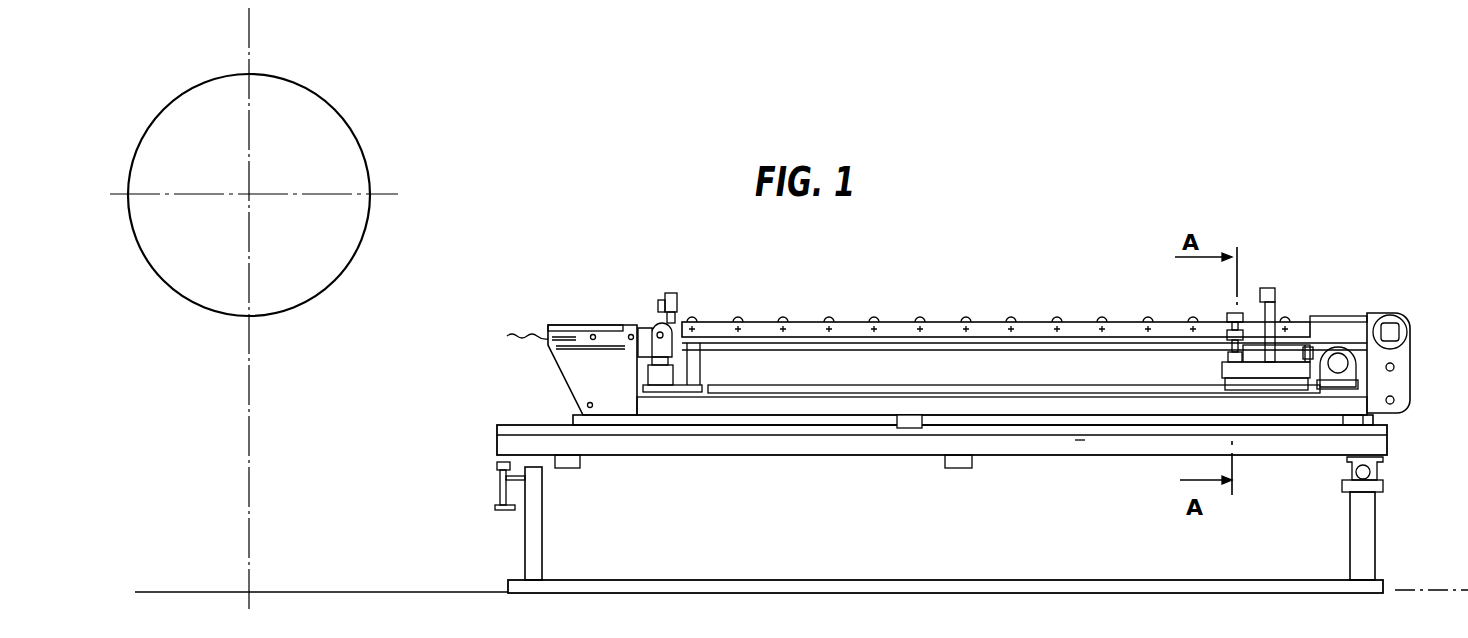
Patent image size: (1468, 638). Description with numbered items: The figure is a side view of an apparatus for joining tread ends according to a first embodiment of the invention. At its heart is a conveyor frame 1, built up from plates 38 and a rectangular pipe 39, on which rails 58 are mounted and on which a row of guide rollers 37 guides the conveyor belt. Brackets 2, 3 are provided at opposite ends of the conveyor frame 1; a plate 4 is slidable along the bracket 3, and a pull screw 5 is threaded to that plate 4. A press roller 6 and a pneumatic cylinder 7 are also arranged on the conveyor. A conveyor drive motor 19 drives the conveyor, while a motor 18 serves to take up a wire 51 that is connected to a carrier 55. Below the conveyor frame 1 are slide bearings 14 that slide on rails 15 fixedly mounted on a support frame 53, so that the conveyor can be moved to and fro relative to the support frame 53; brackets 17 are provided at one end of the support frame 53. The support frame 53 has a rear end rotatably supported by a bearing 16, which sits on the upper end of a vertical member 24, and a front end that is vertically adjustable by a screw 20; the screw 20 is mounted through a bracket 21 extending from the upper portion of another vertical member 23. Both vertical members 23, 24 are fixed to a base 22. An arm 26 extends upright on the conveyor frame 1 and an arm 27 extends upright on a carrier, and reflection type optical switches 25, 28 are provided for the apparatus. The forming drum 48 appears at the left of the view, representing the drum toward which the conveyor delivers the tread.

The conveyor frame 1 is at (802, 404).
The bracket 2 is at (1410, 378).
The bracket 3 is at (566, 370).
The plate 4 is at (590, 330).
The pull screw 5 is at (518, 340).
The press roller 6 is at (676, 336).
The pneumatic cylinder 7 is at (657, 395).
The slide bearing 14 is at (908, 430).
The rails 15 is at (517, 425).
The bearings 16 is at (1384, 485).
The brackets 17 is at (1384, 458).
The motor 18 is at (1346, 352).
The conveyor drive motor 19 is at (1396, 326).
The screw 20 is at (495, 507).
The bracket 21 is at (499, 473).
The base 22 is at (660, 582).
The vertical member 23 is at (545, 565).
The vertical member 24 is at (1377, 540).
The reflection type optical switch 25 is at (666, 306).
The arm 26 is at (672, 294).
The arm 27 is at (1273, 290).
The reflection type optical switch 28 is at (1265, 305).
The guide rollers 37 is at (975, 321).
The plates 38 is at (986, 344).
The rectangular pipe 39 is at (1068, 348).
The forming drum 48 is at (367, 157).
The wire 51 is at (1325, 362).
The support frame 53 is at (1082, 442).
The carrier 55 is at (1252, 370).
The rails 58 is at (786, 387).